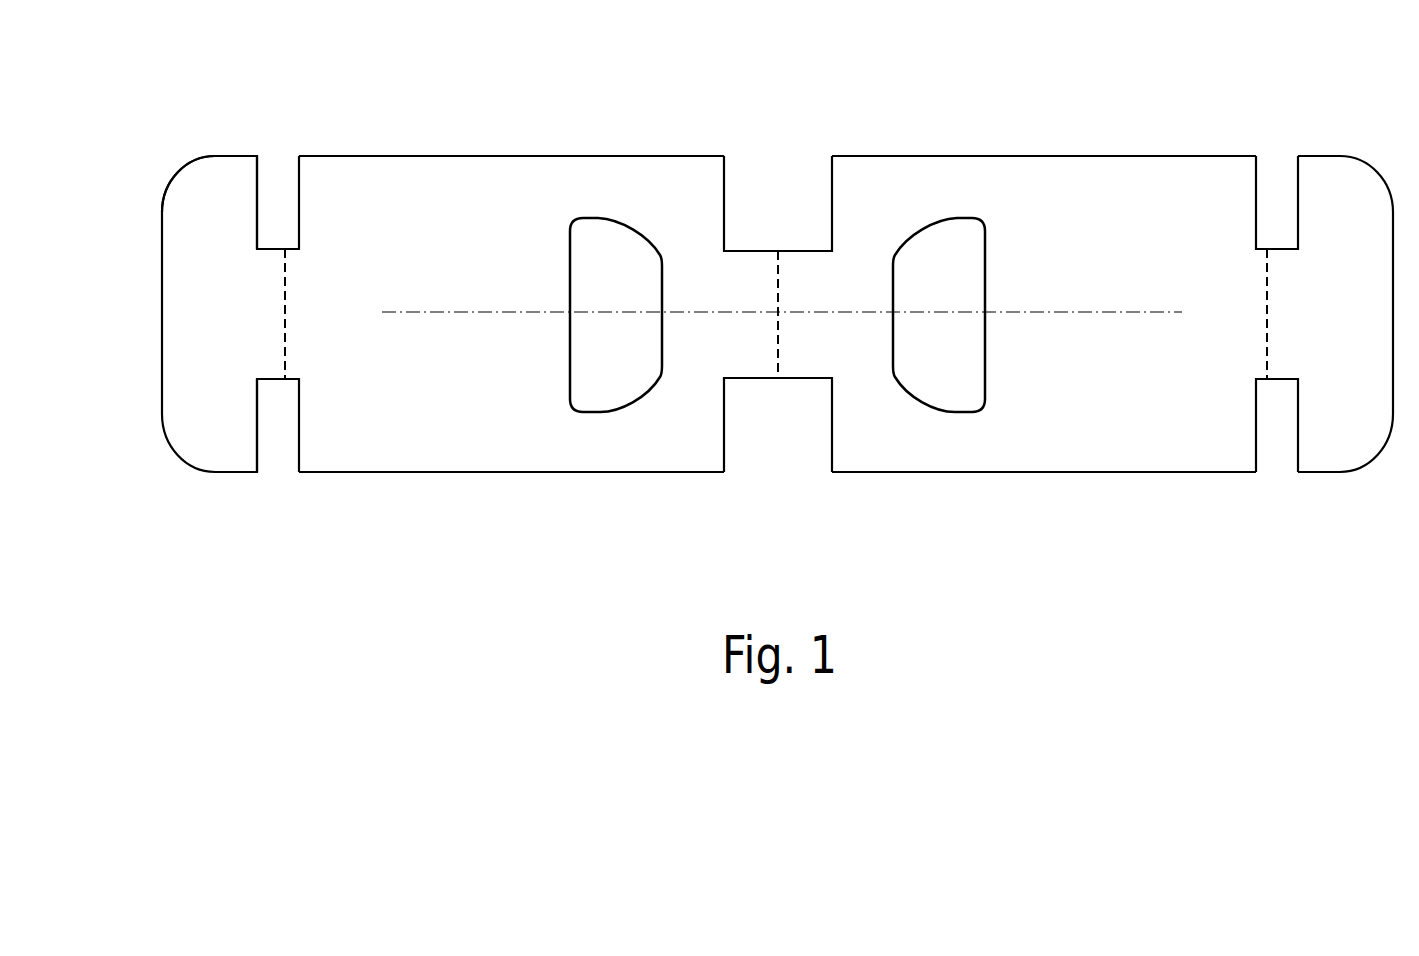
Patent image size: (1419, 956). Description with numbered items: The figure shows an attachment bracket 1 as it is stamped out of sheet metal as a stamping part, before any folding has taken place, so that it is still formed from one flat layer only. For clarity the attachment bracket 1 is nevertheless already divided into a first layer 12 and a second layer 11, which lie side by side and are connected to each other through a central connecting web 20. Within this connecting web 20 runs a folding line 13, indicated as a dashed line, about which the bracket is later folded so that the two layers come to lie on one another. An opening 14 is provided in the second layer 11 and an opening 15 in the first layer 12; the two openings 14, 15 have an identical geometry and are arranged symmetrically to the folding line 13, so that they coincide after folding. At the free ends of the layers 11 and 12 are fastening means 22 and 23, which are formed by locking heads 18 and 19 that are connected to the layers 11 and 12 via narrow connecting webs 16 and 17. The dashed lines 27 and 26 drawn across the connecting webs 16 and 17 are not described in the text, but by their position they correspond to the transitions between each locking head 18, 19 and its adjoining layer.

The attachment bracket 1 is at (911, 538).
The second layer 11 is at (553, 450).
The first layer 12 is at (1102, 455).
The folding line 13 is at (778, 355).
The opening 14 is at (600, 230).
The opening 15 is at (963, 242).
The connecting web 16 is at (273, 263).
The connecting web 17 is at (1283, 265).
The locking head 18 is at (213, 167).
The locking head 19 is at (1332, 453).
The connecting web 20 is at (803, 283).
The fastening means 22 is at (220, 495).
The fastening means 23 is at (1304, 502).
The second bending line 26 is at (1267, 353).
The first bending line 27 is at (285, 350).